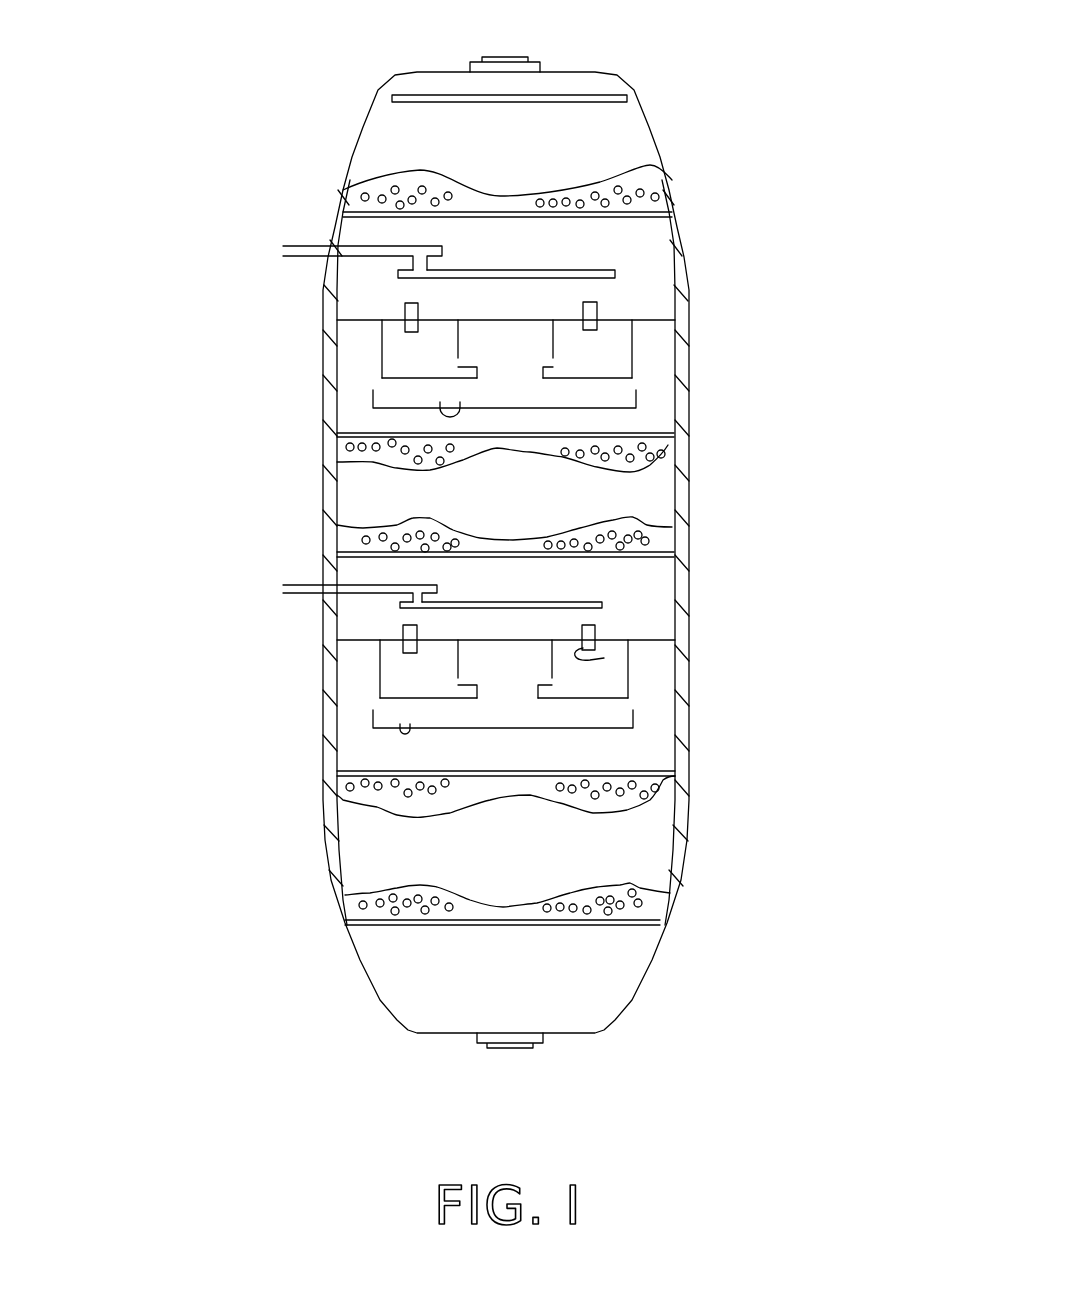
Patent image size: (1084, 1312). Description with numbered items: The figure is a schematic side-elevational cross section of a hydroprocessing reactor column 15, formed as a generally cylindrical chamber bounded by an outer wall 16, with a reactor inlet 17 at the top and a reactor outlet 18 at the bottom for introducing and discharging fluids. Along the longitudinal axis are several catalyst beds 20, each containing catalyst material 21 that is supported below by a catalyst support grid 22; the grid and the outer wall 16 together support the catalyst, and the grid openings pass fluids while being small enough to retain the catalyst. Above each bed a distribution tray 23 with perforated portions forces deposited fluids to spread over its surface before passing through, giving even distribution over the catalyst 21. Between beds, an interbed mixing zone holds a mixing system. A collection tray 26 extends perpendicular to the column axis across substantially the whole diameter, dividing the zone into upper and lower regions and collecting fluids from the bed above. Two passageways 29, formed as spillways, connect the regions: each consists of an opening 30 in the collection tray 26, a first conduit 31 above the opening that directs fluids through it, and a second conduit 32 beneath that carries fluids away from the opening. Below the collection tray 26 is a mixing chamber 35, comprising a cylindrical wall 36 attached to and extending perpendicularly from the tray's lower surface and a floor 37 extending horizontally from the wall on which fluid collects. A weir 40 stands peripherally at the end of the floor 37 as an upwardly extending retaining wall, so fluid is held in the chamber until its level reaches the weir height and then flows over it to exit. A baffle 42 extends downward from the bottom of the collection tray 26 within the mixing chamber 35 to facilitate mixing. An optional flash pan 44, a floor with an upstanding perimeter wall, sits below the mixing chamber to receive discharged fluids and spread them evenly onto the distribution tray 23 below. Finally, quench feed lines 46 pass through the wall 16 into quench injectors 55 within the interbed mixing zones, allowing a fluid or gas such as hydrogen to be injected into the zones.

The reactor column 15 is at (710, 151).
The outer wall 16 is at (327, 362).
The reactor inlet 17 is at (522, 56).
The reactor outlet 18 is at (522, 1048).
The catalyst bed 20 is at (517, 166).
The catalyst material 21 is at (361, 197).
The catalyst support grid 22 is at (672, 218).
The distribution tray 23 is at (621, 95).
The collection tray 26 is at (486, 320).
The passageway 29 is at (603, 287).
The opening 30 is at (419, 312).
The first conduit 31 is at (403, 310).
The second conduit 32 is at (388, 330).
The mixing chamber 35 is at (652, 344).
The cylindrical wall 36 is at (380, 322).
The floor 37 is at (383, 380).
The weir 40 is at (470, 367).
The baffle 42 is at (550, 340).
The flash pan 44 is at (463, 404).
The quench feed line 46 is at (303, 231).
The quench injector 55 is at (494, 270).